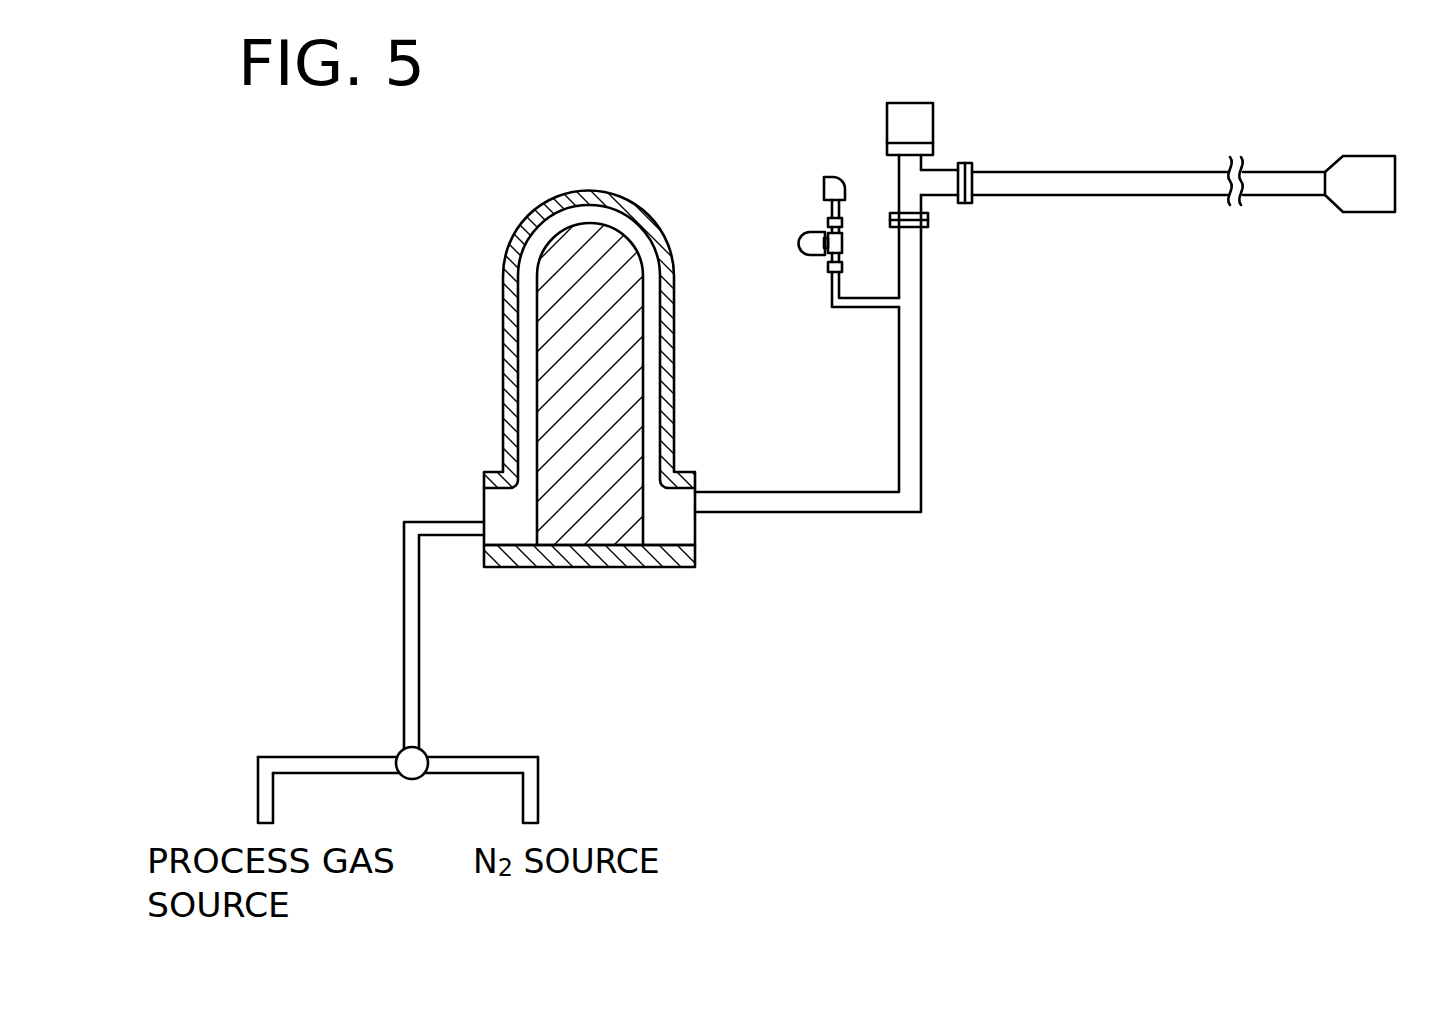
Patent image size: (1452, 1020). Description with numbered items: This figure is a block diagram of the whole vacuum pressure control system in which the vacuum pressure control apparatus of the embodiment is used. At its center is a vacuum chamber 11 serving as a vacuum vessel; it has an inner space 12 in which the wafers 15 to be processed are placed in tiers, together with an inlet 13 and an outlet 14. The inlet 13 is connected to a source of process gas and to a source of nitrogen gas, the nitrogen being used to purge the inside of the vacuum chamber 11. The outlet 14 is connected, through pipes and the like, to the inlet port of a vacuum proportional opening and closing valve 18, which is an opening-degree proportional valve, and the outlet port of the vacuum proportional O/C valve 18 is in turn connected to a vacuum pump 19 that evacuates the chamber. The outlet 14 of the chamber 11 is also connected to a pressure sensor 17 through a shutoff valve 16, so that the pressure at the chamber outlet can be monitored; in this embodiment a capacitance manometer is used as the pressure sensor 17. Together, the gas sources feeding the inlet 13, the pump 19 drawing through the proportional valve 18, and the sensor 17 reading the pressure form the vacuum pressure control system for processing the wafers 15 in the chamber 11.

The vacuum chamber 11 is at (557, 185).
The inner space 12 is at (537, 240).
The inlet 13 is at (484, 507).
The outlet 14 is at (697, 537).
The wafers 15 is at (572, 307).
The shutoff valve 16 is at (813, 240).
The pressure sensor 17 is at (833, 197).
The vacuum proportional opening and closing valve 18 is at (930, 117).
The vacuum pump 19 is at (1365, 180).